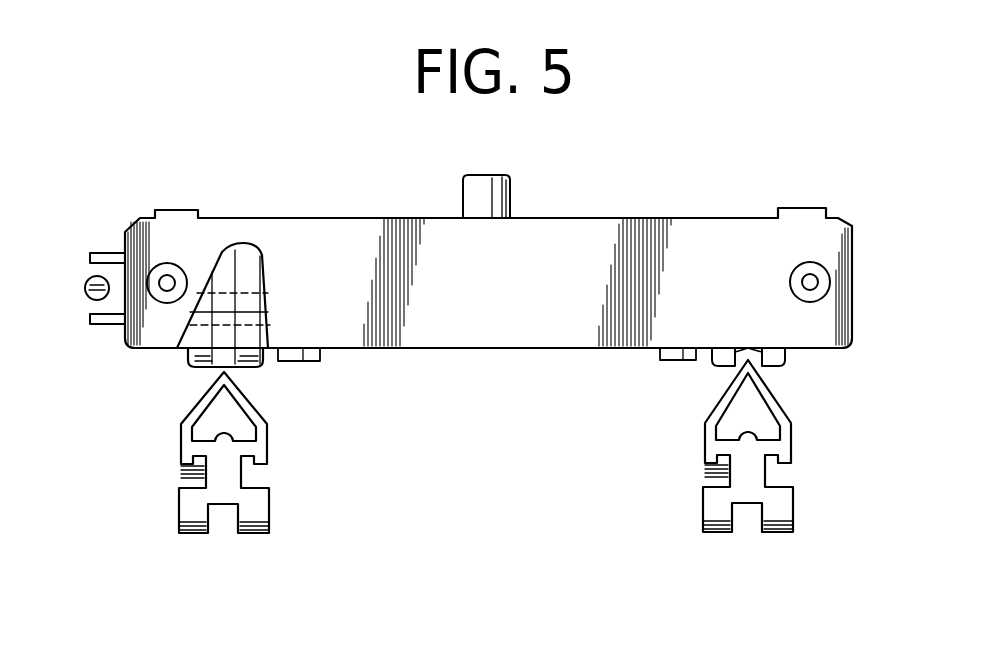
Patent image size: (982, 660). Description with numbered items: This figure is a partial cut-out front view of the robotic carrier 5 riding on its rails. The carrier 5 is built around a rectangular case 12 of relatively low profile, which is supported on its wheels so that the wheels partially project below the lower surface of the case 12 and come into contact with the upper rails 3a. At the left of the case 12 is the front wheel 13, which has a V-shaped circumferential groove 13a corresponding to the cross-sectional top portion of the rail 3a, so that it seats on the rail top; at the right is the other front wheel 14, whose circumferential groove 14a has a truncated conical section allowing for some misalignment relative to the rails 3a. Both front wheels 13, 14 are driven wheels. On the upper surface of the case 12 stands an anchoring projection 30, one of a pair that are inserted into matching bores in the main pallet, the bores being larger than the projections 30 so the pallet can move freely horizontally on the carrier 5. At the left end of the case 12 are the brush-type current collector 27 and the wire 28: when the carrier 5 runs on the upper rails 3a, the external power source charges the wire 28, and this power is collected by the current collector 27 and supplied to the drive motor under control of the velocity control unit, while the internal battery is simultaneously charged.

The robotic carrier 5 is at (494, 236).
The rectangular case 12 is at (842, 252).
The anchoring projection 30 is at (492, 175).
The brush-type current collector 27 is at (104, 255).
The wire 28 is at (89, 285).
The V-shaped circumferential groove 13a is at (232, 278).
The front wheel 13 is at (188, 362).
The upper rail 3a is at (250, 405).
The front wheel 14 is at (788, 358).
The circumferential groove 14a is at (750, 347).